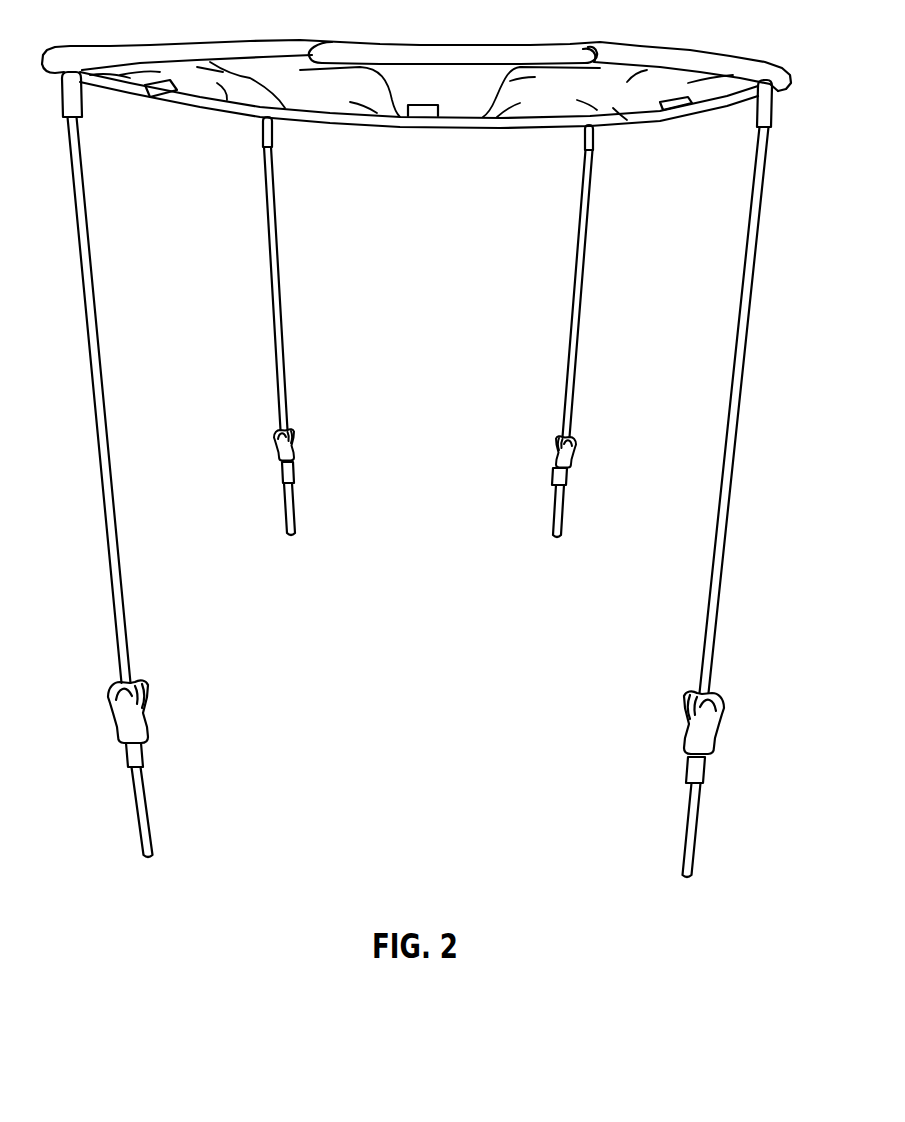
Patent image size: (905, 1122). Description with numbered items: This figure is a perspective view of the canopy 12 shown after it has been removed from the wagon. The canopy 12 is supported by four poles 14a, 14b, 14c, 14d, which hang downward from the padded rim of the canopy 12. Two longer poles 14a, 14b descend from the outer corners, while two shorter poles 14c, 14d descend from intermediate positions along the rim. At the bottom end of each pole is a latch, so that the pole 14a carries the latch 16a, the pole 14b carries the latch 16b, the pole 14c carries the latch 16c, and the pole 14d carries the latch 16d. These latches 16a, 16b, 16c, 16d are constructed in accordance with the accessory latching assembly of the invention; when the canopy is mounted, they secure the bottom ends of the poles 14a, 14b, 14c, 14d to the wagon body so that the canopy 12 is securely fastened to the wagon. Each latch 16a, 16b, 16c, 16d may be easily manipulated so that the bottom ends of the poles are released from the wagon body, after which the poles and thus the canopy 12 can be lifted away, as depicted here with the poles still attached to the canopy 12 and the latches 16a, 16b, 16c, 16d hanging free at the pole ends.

The canopy 12 is at (233, 40).
The pole 14a is at (117, 592).
The pole 14b is at (710, 588).
The pole 14c is at (573, 372).
The pole 14d is at (283, 353).
The latch 16a is at (113, 703).
The latch 16b is at (710, 735).
The latch 16c is at (572, 447).
The latch 16d is at (295, 447).